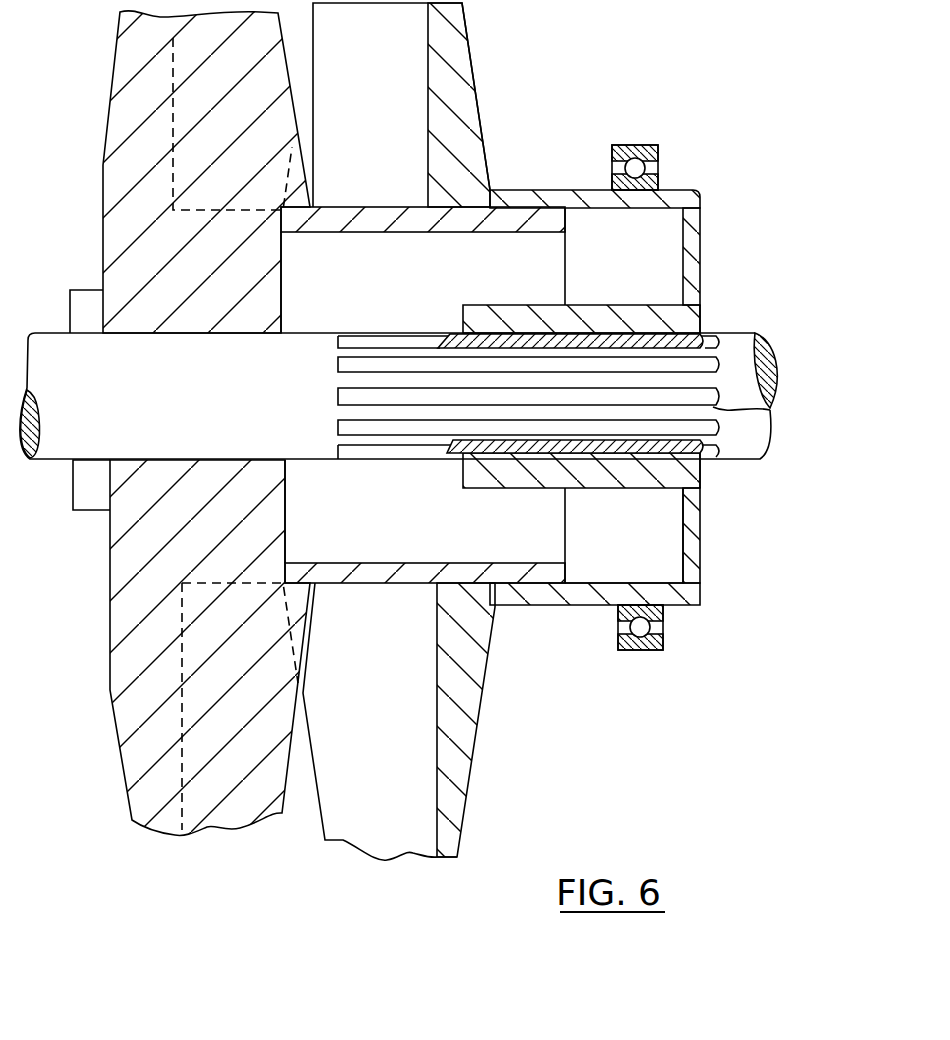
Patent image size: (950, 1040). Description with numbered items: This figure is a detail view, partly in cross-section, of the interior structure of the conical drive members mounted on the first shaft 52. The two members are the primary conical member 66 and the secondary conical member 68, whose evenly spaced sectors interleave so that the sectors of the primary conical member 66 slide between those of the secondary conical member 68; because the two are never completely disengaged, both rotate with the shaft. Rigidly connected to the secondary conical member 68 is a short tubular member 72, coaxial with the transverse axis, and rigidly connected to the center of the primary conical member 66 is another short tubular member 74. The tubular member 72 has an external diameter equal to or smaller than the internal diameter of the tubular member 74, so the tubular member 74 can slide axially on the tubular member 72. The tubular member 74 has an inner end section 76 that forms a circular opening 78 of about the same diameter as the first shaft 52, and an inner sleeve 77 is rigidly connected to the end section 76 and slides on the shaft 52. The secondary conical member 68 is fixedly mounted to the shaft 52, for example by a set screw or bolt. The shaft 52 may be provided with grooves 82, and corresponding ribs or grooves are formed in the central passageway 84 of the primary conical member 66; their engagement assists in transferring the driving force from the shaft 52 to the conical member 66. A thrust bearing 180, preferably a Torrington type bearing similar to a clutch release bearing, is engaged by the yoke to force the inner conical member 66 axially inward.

The first shaft 52 is at (733, 458).
The primary conical member 66 is at (458, 62).
The secondary conical member 68 is at (118, 63).
The short tubular member 72 is at (494, 232).
The tubular member 74 is at (550, 189).
The inner end section 76 is at (690, 241).
The inner sleeve 77 is at (613, 467).
The circular opening 78 is at (703, 331).
The grooves 82 is at (770, 411).
The central passageway 84 is at (687, 328).
The thrust bearing 180 is at (660, 639).